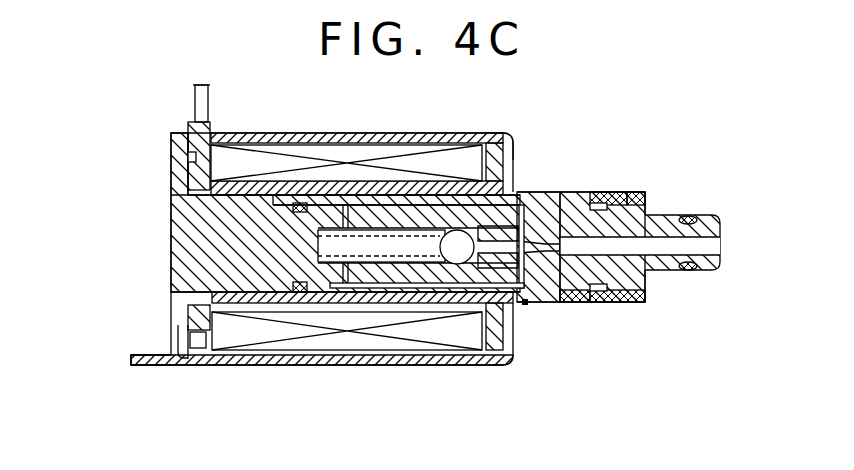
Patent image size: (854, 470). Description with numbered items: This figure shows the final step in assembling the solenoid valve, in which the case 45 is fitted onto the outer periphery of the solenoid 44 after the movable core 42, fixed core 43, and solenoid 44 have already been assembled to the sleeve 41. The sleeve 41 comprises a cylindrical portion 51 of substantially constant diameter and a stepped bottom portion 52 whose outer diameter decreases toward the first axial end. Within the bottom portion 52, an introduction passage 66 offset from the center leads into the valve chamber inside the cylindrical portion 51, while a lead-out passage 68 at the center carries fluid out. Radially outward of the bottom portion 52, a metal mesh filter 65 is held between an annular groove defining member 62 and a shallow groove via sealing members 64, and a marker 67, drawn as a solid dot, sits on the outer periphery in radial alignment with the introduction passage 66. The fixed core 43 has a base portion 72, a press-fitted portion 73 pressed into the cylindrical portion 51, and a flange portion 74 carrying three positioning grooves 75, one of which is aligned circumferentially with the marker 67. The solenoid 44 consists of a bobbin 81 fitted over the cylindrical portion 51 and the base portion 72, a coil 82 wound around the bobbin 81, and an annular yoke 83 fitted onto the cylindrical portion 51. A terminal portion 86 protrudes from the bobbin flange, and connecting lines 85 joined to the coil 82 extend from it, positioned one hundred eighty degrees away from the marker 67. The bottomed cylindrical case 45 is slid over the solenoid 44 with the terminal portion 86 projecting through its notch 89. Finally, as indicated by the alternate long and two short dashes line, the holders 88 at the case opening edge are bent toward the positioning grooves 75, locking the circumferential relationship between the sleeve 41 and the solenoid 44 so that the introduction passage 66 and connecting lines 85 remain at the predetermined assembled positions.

The sleeve 41 is at (648, 193).
The movable core 42 is at (458, 225).
The fixed core 43 is at (170, 252).
The solenoid 44 is at (522, 370).
The case 45 is at (505, 133).
The cylindrical portion 51 is at (415, 225).
The bottom portion 52 is at (533, 205).
The groove defining member 62 is at (640, 195).
The sealing members 64 is at (627, 303).
The metal mesh filter 65 is at (598, 195).
The introduction passage 66 is at (565, 303).
The marker 67 is at (522, 305).
The lead-out passage 68 is at (705, 262).
The base portion 72 is at (262, 205).
The press-fitted portion 73 is at (325, 215).
The flange portion 74 is at (181, 170).
The positioning grooves 75 is at (188, 360).
The bobbin 81 is at (185, 313).
The coil 82 is at (346, 335).
The yoke 83 is at (506, 145).
The connecting lines 85 is at (195, 100).
The terminal portion 86 is at (189, 138).
The holders 88 is at (132, 355).
The notch 89 is at (212, 128).